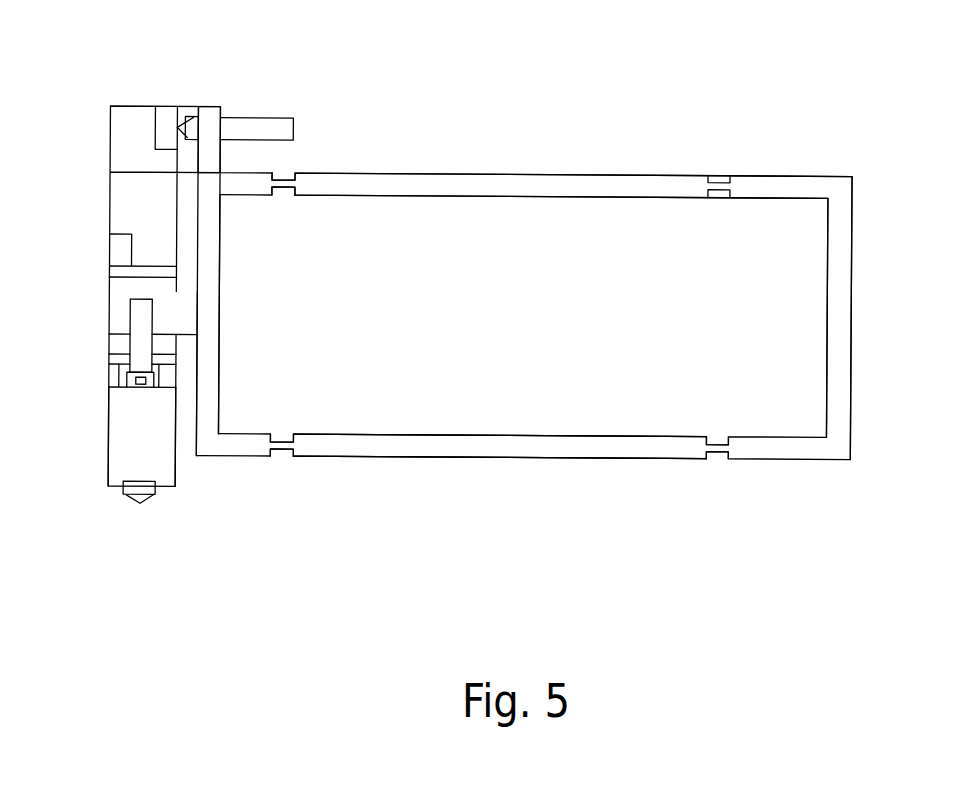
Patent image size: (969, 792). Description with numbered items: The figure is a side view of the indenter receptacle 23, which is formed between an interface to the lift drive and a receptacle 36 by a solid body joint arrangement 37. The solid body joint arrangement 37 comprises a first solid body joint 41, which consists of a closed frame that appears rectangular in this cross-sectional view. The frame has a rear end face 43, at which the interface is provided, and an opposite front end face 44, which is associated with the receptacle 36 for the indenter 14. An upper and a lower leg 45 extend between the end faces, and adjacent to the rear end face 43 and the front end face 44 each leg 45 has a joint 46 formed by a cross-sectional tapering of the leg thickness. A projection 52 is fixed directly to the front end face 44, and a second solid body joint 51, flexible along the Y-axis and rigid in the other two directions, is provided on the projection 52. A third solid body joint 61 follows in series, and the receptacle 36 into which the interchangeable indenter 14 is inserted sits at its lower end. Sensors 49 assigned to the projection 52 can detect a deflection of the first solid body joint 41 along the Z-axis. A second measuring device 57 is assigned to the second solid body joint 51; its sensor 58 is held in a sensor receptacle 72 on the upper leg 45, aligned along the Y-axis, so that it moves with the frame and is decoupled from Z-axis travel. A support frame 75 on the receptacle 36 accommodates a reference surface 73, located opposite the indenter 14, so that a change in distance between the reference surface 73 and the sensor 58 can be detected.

The indenter 14 is at (143, 513).
The indenter receptacle 23 is at (495, 514).
The receptacle 36 is at (116, 500).
The solid body joint arrangement 37 is at (392, 477).
The first solid body joint 41 is at (653, 487).
The rear end face 43 is at (838, 227).
The front end face 44 is at (205, 375).
The leg 45 is at (547, 185).
The joint 46 is at (278, 462).
The sensors 49 is at (138, 317).
The second solid body joint 51 is at (97, 365).
The projection 52 is at (118, 290).
The second measuring device 57 is at (255, 96).
The sensor 58 is at (275, 128).
The third solid body joint 61 is at (101, 390).
The sensor receptacle 72 is at (208, 118).
The reference surface 73 is at (192, 118).
The support frame 75 is at (167, 103).